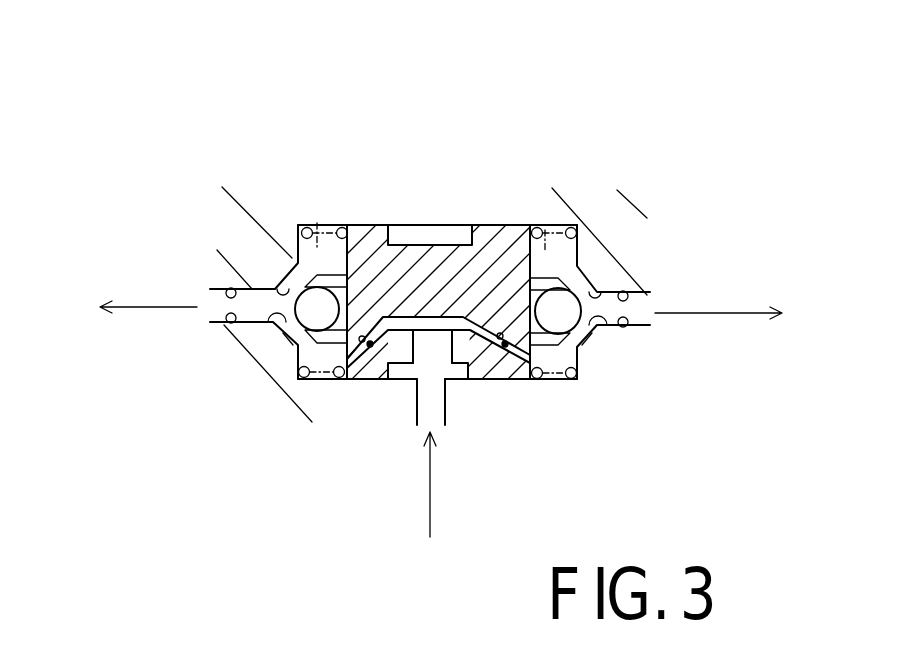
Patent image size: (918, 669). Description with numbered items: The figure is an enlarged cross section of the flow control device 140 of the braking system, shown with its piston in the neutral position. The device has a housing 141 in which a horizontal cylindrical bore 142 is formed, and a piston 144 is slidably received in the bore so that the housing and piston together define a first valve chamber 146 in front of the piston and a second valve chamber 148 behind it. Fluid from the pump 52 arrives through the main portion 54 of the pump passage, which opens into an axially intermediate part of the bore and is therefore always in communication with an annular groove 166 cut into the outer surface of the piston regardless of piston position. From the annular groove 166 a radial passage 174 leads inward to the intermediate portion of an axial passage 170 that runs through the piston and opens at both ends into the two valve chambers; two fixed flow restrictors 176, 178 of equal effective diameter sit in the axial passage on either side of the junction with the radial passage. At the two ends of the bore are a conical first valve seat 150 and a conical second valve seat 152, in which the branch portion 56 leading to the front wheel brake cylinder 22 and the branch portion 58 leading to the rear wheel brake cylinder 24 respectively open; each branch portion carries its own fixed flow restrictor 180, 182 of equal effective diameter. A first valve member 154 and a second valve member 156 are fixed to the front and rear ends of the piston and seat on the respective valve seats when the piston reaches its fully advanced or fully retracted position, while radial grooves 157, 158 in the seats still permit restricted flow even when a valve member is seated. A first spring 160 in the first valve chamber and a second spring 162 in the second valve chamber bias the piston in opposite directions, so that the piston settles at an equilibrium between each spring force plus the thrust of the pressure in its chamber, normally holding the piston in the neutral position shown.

The flow control device 140 is at (565, 90).
The housing 141 is at (447, 200).
The cylindrical bore 142 is at (382, 224).
The piston 144 is at (483, 257).
The first valve chamber 146 is at (318, 224).
The second valve chamber 148 is at (550, 232).
The groove 157 is at (287, 268).
The groove 158 is at (597, 291).
The fixed flow restrictor 180 is at (226, 288).
The fixed flow restrictor 182 is at (628, 326).
The branch portion 58 is at (640, 293).
The branch portion 56 is at (247, 312).
The first valve seat 150 is at (292, 335).
The second valve seat 152 is at (577, 345).
The first valve member 154 is at (223, 387).
The second valve member 156 is at (590, 327).
The first spring 160 is at (304, 378).
The second spring 162 is at (538, 380).
The axial passage 170 is at (380, 380).
The fixed flow restrictor 176 is at (370, 347).
The fixed flow restrictor 178 is at (500, 370).
The annular groove 166 is at (440, 345).
The radial passage 174 is at (478, 355).
The main portion 54 is at (417, 412).
The pump 52 is at (429, 539).
The front wheel brake cylinder 22 is at (112, 301).
The rear wheel brake cylinder 24 is at (760, 309).